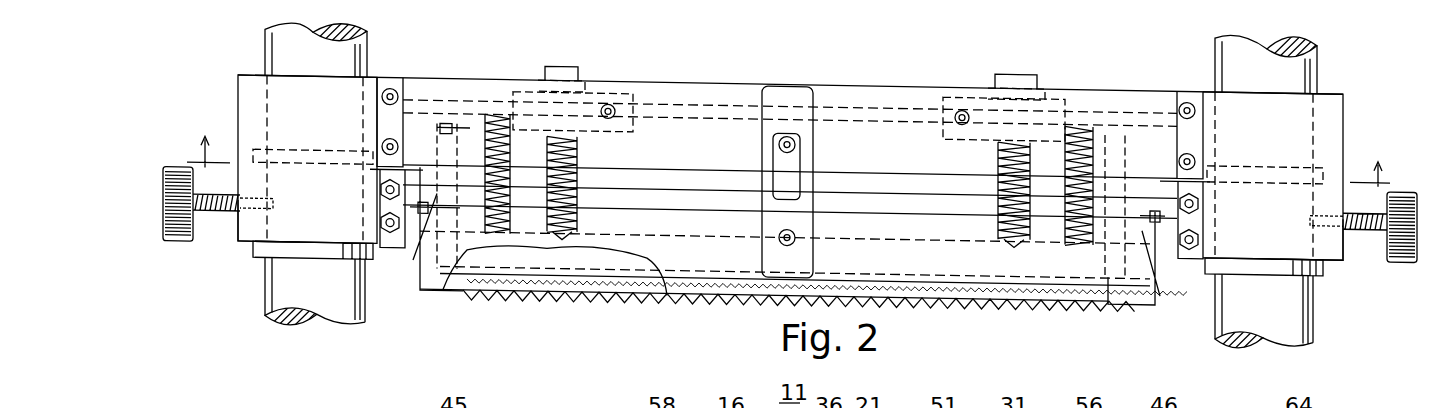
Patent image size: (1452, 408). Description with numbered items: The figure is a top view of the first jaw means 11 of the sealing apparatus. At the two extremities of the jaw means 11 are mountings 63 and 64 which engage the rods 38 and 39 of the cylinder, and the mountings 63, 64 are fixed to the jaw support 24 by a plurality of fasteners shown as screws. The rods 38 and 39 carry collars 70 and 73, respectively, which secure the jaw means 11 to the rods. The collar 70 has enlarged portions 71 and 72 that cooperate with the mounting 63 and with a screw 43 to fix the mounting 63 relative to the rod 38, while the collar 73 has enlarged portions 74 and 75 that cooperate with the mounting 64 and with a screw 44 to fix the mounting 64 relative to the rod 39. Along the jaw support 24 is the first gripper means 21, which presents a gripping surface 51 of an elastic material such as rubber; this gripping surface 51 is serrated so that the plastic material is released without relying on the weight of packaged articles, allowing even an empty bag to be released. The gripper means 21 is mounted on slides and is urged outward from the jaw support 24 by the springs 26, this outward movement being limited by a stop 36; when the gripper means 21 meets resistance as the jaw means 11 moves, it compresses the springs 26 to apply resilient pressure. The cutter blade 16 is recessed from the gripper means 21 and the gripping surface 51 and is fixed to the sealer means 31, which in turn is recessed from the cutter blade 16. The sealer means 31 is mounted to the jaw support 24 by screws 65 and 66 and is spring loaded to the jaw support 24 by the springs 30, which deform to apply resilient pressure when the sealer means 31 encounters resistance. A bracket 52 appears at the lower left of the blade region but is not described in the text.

The first jaw means 11 is at (790, 189).
The cutter blade 16 is at (580, 286).
The first gripper means 21 is at (503, 246).
The jaw support 24 is at (685, 75).
The springs 26 is at (503, 108).
The springs 30 is at (580, 146).
The first sealer means 31 is at (672, 292).
The stop 36 is at (813, 158).
The rod 38 is at (265, 295).
The rod 39 is at (1316, 302).
The screw 43 is at (182, 245).
The screw 44 is at (1400, 246).
The gripping surface 51 is at (620, 286).
The left blade bracket 52 is at (482, 288).
The mounting 63 is at (238, 95).
The mounting 64 is at (1345, 112).
The screw 65 is at (561, 61).
The screw 66 is at (1013, 62).
The collar 70 is at (282, 221).
The enlarged portion 71 is at (257, 258).
The enlarged portion 72 is at (287, 146).
The collar 73 is at (1253, 229).
The enlarged portion 74 is at (1210, 262).
The enlarged portion 75 is at (1280, 148).